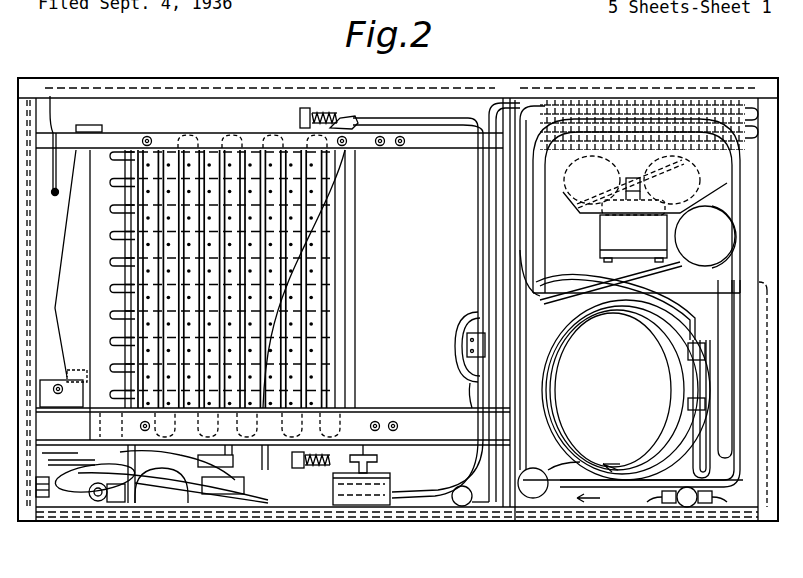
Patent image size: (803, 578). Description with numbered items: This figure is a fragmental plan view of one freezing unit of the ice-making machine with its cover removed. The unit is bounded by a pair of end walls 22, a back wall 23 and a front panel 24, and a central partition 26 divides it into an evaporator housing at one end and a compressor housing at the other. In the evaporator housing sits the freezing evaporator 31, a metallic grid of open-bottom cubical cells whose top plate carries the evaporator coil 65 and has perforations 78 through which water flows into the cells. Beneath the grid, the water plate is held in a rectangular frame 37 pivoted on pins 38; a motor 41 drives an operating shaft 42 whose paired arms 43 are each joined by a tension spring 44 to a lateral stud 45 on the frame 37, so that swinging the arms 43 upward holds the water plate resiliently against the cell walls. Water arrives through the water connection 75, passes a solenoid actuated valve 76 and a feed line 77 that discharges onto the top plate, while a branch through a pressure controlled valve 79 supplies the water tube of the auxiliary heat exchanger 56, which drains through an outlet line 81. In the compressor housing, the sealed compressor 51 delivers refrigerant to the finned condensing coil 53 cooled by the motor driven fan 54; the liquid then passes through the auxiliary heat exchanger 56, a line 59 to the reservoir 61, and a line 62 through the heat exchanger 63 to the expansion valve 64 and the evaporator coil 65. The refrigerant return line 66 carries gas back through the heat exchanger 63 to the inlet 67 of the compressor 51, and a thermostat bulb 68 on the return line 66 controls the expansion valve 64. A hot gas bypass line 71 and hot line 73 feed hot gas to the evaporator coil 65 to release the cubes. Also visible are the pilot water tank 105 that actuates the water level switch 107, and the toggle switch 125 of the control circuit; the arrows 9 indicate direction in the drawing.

The end walls 22 is at (22, 82).
The back wall 23 is at (229, 78).
The front panel 24 is at (380, 521).
The central partition 26 is at (494, 244).
The freezing evaporator 31 is at (383, 289).
The rectangular frame 37 is at (221, 474).
The pins 38 is at (125, 133).
The motor 41 is at (388, 480).
The operating shaft 42 is at (356, 351).
The arms 43 is at (353, 130).
The tension spring 44 is at (330, 113).
The lateral stud 45 is at (305, 108).
The sealed compressor 51 is at (616, 366).
The finned condensing coil 53 is at (655, 115).
The motor driven fan 54 is at (580, 196).
The auxiliary heat exchanger 56 is at (676, 397).
The line 59 is at (650, 262).
The reservoir 61 is at (712, 246).
The line 62 is at (735, 310).
The heat exchanger 63 is at (727, 200).
The expansion valve 64 is at (118, 502).
The evaporator coil 65 is at (346, 205).
The refrigerant return line 66 is at (478, 179).
The inlet 67 is at (688, 405).
The thermostat bulb 68 is at (467, 340).
The hot gas bypass line 71 is at (533, 499).
The hot line 73 is at (243, 495).
The water connection 75 is at (50, 96).
The solenoid actuated valve 76 is at (44, 500).
The feed line 77 is at (80, 480).
The feed line 78 is at (272, 268).
The pressure controlled valve 79 is at (688, 508).
The outlet line 81 is at (55, 109).
The pilot water tank 105 is at (158, 478).
The water level switch 107 is at (232, 494).
The toggle switch 125 is at (266, 508).
The flow direction arrow 9 is at (603, 505).